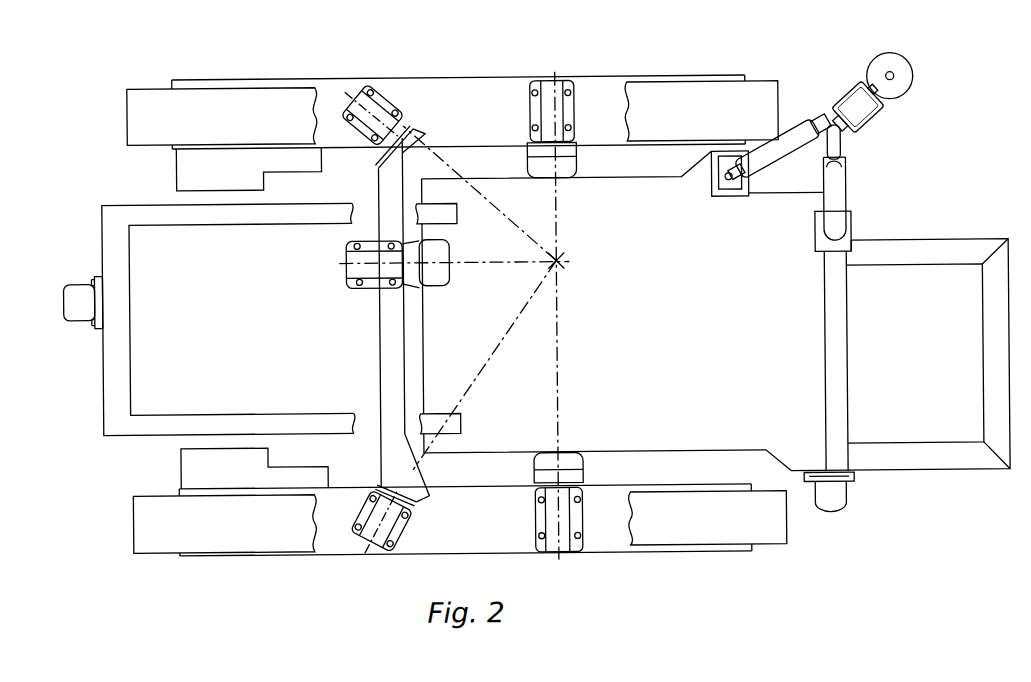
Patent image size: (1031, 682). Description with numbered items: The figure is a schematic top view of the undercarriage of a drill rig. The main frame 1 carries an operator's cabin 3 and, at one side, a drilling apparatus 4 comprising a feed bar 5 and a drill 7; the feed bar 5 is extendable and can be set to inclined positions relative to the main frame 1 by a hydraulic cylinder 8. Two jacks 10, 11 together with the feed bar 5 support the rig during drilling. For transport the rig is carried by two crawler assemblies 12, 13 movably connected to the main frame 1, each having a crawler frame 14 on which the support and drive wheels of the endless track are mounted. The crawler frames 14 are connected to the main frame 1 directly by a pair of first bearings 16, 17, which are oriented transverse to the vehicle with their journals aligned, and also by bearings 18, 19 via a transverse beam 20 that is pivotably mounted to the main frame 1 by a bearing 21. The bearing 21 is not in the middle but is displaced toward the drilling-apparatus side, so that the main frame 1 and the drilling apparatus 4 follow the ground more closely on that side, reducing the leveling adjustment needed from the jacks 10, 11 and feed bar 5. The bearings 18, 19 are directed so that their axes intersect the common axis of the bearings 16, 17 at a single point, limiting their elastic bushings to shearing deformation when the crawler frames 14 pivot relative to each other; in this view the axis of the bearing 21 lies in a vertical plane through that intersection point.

The main frame 1 is at (700, 373).
The operator's cabin 3 is at (935, 373).
The drilling apparatus 4 is at (881, 134).
The feed bar 5 is at (851, 107).
The drill 7 is at (915, 75).
The hydraulic cylinder 8 is at (796, 140).
The jack 10 is at (846, 508).
The jack 11 is at (72, 290).
The crawler assembly 12 is at (650, 557).
The crawler assembly 13 is at (444, 76).
The crawler frame 14 is at (488, 91).
The first bearing 16 is at (527, 520).
The first bearing 17 is at (518, 122).
The bearing 18 is at (420, 518).
The bearing 19 is at (415, 104).
The transverse beam 20 is at (385, 370).
The bearing 21 is at (337, 282).